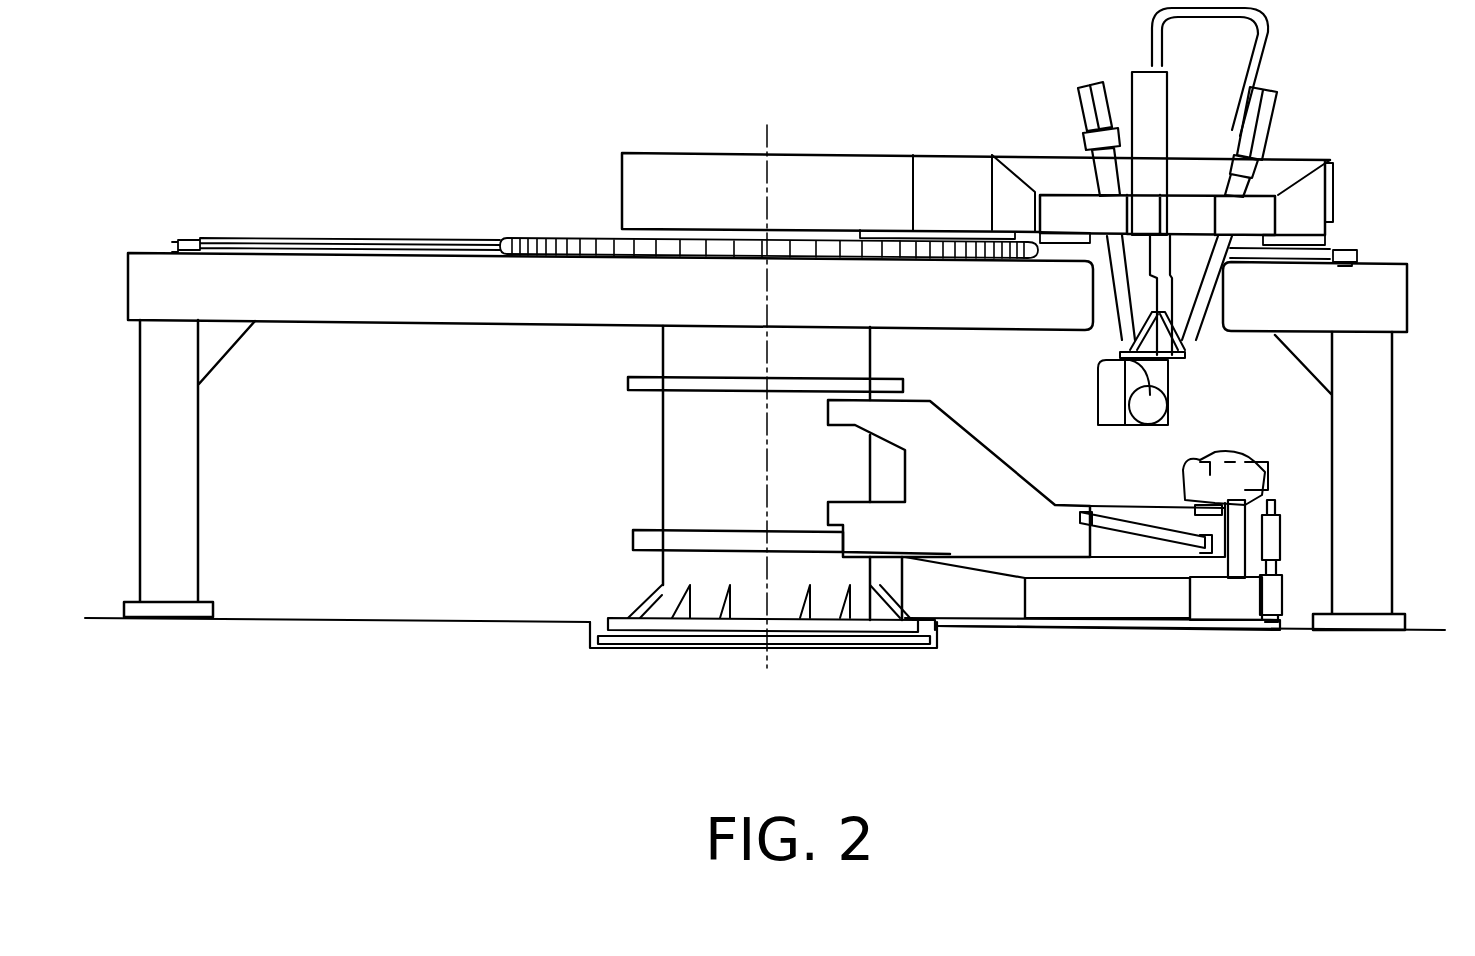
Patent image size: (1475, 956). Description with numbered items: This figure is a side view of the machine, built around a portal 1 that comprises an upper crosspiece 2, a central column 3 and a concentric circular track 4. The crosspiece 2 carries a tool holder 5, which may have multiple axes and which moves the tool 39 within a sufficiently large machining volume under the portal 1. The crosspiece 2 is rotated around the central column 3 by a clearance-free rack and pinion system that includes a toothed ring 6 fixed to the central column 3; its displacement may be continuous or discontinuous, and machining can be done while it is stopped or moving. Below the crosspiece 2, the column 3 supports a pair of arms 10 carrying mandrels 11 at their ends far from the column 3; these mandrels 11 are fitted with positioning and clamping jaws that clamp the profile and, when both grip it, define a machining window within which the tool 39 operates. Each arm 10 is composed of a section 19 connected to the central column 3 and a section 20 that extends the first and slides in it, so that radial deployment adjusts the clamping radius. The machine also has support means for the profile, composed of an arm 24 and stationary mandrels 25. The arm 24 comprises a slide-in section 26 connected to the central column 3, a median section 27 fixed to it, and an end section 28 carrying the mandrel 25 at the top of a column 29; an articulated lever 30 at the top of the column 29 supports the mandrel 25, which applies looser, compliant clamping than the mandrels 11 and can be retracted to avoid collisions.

The portal 1 is at (1000, 118).
The upper crosspiece 2 is at (834, 153).
The central column 3 is at (620, 517).
The concentric circular track 4 is at (240, 238).
The tool holder 5 is at (1249, 128).
The toothed ring 6 is at (560, 243).
The arms 10 is at (1035, 452).
The mandrels 11 is at (1192, 485).
The section 19 is at (922, 412).
The section 20 is at (1118, 524).
The arm 24 is at (1063, 650).
The stationary mandrels 25 is at (1185, 498).
The slide-in section 26 is at (988, 607).
The median section 27 is at (1140, 608).
The end section 28 is at (1232, 608).
The column 29 is at (1278, 545).
The articulated lever 30 is at (1247, 482).
The tool 39 is at (1152, 406).